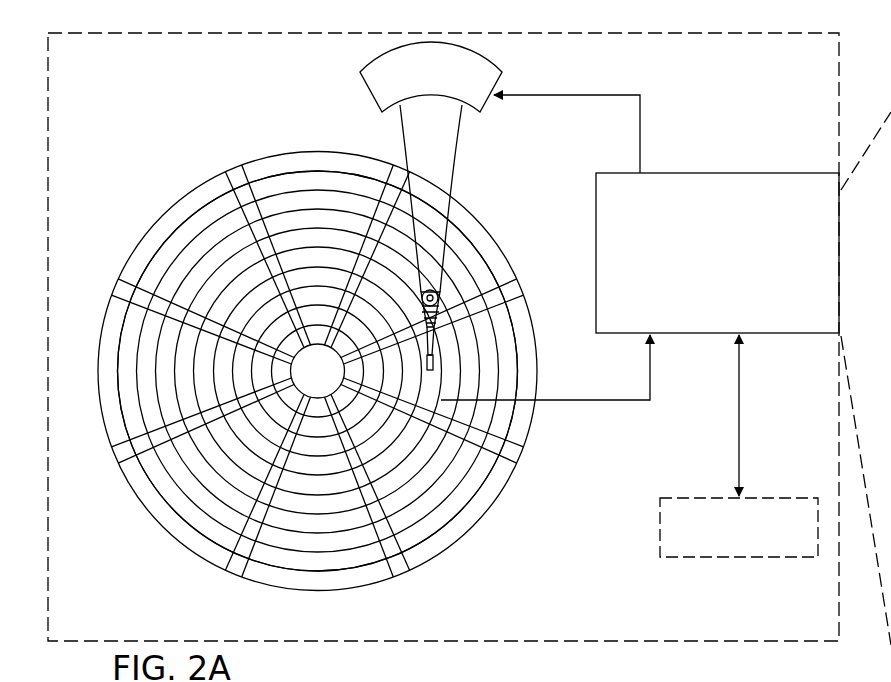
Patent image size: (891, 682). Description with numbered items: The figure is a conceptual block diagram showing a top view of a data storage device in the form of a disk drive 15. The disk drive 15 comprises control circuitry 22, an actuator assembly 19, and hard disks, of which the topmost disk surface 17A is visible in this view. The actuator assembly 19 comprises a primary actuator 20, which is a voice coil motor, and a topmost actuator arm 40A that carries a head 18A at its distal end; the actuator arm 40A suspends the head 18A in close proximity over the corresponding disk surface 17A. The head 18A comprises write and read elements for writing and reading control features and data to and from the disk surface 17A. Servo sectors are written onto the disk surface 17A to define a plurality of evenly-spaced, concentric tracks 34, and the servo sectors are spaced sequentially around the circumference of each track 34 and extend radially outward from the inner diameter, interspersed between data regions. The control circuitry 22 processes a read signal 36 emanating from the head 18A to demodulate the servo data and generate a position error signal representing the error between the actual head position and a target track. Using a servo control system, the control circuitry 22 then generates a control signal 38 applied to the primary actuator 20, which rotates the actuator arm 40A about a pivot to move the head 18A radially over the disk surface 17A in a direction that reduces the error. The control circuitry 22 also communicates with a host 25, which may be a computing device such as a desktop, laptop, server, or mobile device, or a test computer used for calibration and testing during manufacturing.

The disk drive 15 is at (767, 646).
The topmost disk surface 17A is at (172, 204).
The head 18A is at (441, 374).
The actuator assembly 19 is at (478, 137).
The primary actuator 20 is at (500, 99).
The control circuitry 22 is at (717, 253).
The host 25 is at (739, 446).
The concentric tracks 34 is at (323, 178).
The read signal 36 is at (627, 402).
The control signal 38 is at (640, 119).
The topmost actuator arm 40A is at (448, 178).